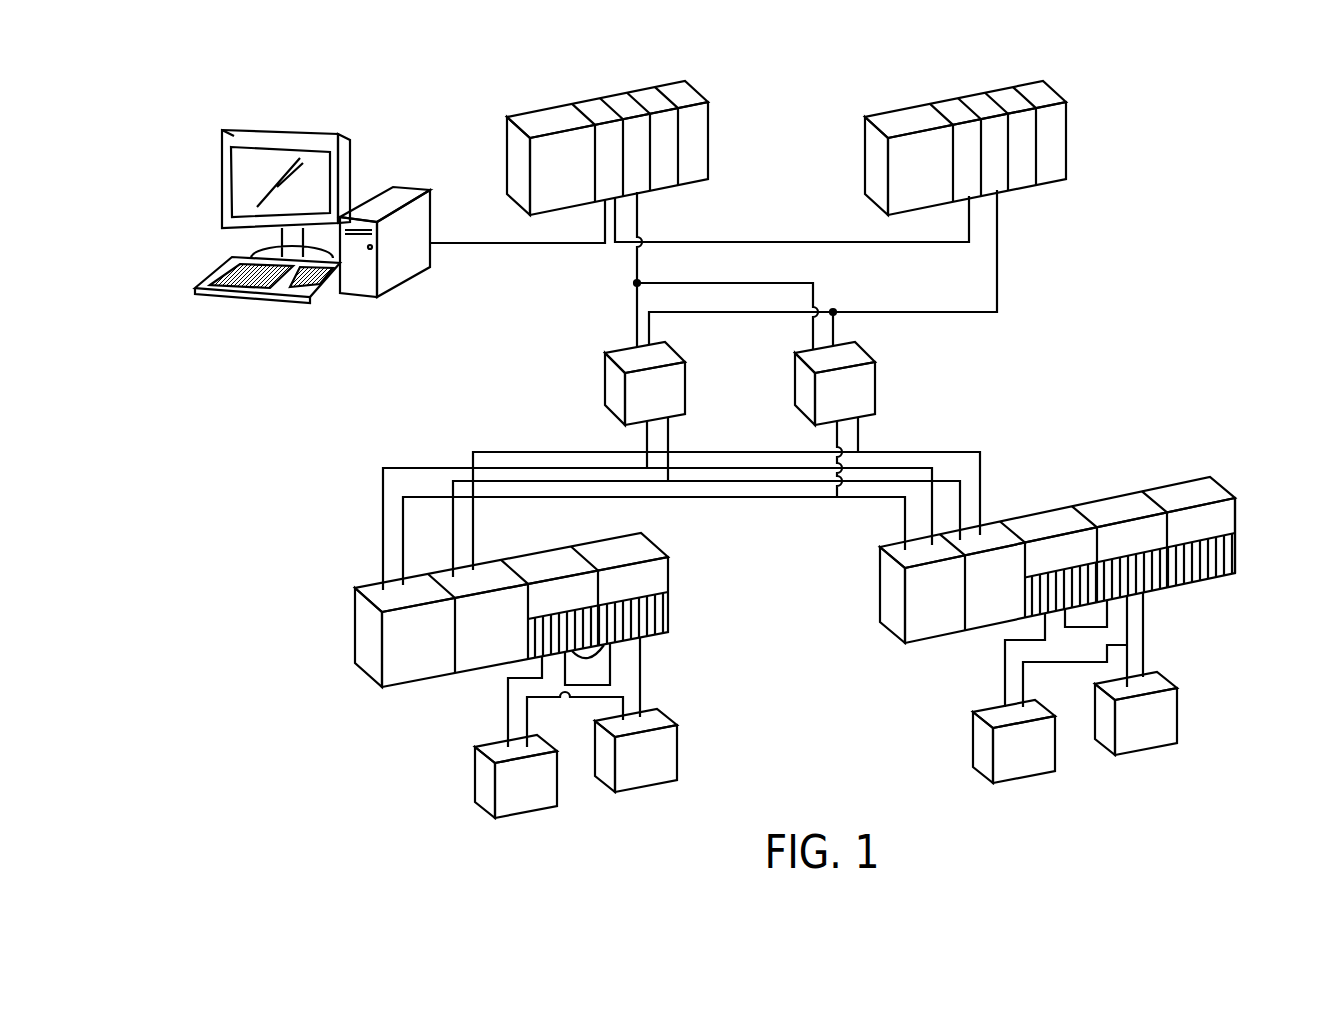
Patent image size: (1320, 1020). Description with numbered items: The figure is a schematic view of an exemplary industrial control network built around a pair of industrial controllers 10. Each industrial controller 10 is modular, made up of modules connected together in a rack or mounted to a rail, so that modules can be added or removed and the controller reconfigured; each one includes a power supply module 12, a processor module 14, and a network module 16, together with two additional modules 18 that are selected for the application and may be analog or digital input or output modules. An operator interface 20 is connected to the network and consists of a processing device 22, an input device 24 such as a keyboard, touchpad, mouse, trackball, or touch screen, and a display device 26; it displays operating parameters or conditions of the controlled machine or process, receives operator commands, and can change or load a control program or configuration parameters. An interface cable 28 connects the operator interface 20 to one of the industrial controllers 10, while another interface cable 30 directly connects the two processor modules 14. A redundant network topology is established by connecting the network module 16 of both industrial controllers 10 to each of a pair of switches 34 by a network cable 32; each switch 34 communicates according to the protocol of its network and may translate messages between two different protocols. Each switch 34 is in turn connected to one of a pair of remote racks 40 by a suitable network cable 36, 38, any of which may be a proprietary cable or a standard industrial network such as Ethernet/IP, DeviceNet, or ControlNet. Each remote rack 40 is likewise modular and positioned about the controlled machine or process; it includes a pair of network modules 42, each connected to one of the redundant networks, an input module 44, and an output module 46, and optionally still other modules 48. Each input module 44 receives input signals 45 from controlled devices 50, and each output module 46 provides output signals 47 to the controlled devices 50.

The industrial controller 10 is at (498, 72).
The power supply module 12 is at (552, 118).
The processor module 14 is at (590, 108).
The network module 16 is at (627, 102).
The additional modules 18 is at (675, 93).
The operator interface 20 is at (190, 100).
The processing device 22 is at (398, 194).
The input device 24 is at (211, 275).
The display device 26 is at (222, 180).
The interface cable 28 is at (517, 247).
The interface cable 30 is at (789, 241).
The network cable 32 is at (640, 268).
The switch 34 is at (612, 382).
The network cable 36 is at (400, 528).
The network cable 38 is at (457, 533).
The remote rack 40 is at (322, 626).
The network module 42 is at (400, 655).
The input module 44 is at (551, 605).
The input signals 45 is at (507, 697).
The output module 46 is at (617, 592).
The output signals 47 is at (524, 723).
The other modules 48 is at (1187, 537).
The controlled devices 50 is at (513, 796).